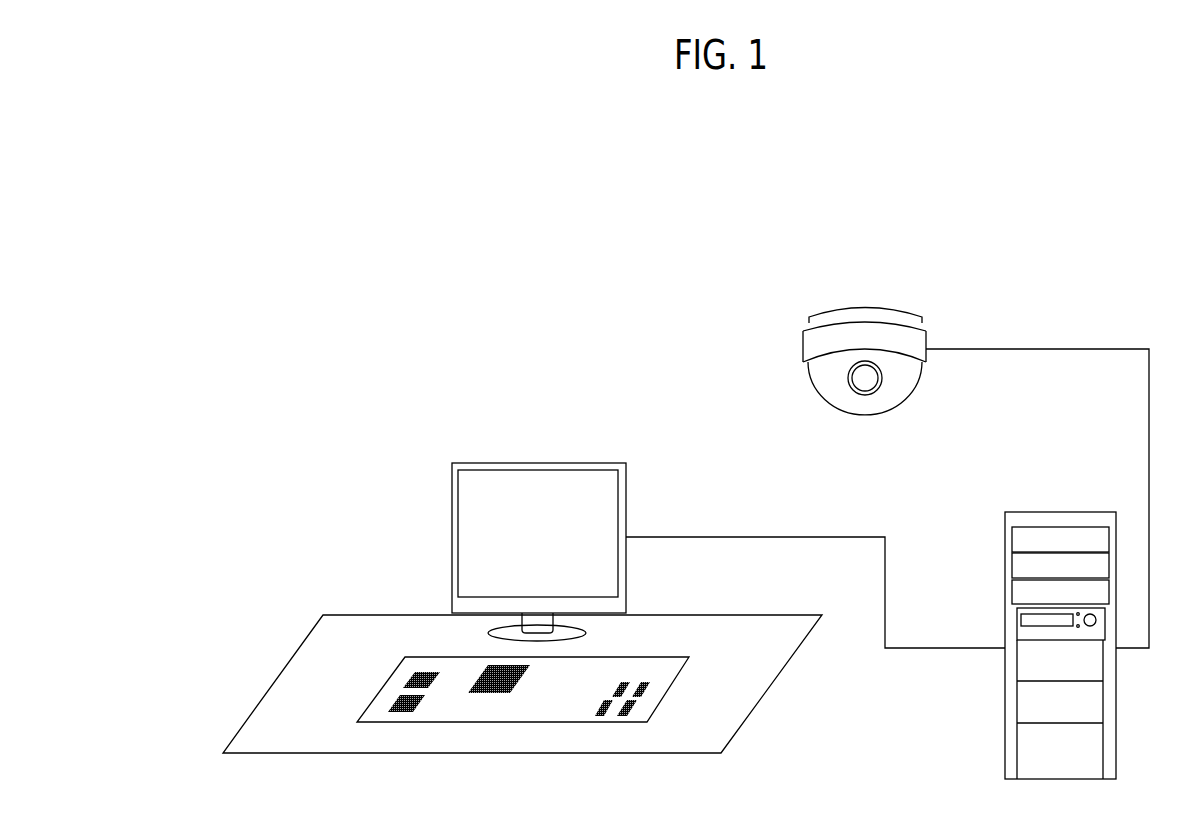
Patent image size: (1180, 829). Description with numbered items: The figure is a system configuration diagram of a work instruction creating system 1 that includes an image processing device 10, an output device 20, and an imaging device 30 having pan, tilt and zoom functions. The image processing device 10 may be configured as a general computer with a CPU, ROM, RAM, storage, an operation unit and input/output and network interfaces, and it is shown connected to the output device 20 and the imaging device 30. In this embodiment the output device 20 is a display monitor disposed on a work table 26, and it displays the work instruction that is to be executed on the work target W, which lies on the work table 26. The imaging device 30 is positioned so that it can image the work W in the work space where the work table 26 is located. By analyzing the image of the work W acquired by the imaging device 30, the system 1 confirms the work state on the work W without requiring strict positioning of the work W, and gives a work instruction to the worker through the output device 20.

The work instruction creating system 1 is at (686, 290).
The image processing device 10 is at (1088, 512).
The output device 20 is at (592, 463).
The work table 26 is at (728, 716).
The imaging device 30 is at (930, 356).
The work target W is at (385, 684).